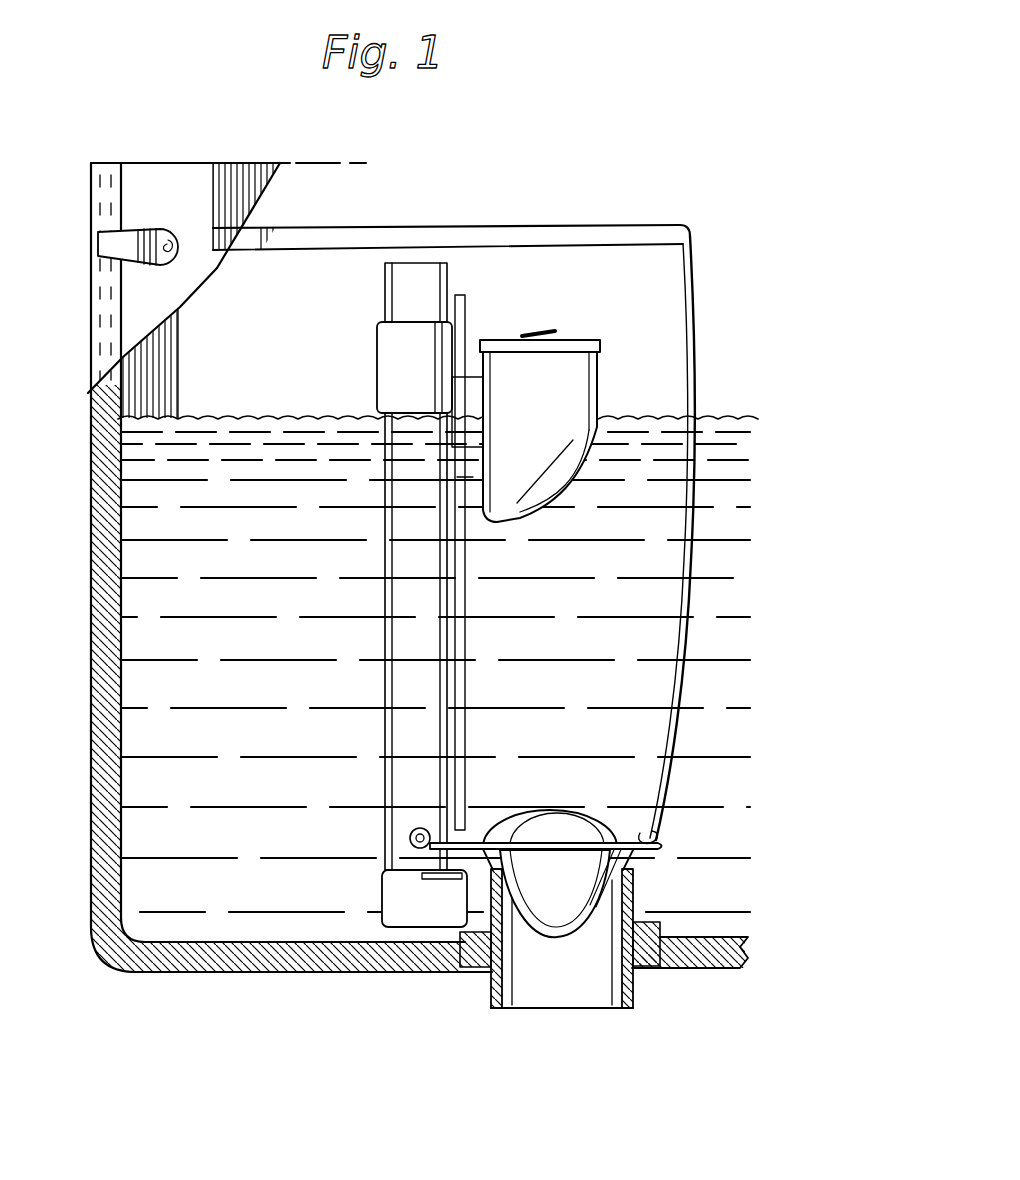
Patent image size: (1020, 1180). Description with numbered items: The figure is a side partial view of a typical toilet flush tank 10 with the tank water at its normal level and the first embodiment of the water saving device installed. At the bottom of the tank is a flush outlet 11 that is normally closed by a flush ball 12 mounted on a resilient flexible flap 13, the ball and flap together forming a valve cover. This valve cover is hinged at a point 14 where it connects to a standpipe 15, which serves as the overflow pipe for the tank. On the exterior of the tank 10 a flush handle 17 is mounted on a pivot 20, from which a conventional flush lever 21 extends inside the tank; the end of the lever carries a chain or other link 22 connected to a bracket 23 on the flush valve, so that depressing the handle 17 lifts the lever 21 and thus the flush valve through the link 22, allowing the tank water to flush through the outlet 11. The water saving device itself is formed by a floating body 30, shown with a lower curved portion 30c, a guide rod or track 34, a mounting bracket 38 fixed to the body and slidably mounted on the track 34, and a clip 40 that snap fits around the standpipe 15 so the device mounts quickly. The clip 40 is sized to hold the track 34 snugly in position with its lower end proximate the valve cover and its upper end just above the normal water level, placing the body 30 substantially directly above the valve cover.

The flush tank 10 is at (213, 960).
The flush outlet 11 is at (633, 885).
The flush ball 12 is at (612, 906).
The resilient flexible flap 13 is at (488, 850).
The hinge point 14 is at (405, 847).
The standpipe 15 is at (390, 602).
The flush handle 17 is at (127, 230).
The pivot 20 is at (150, 273).
The flush lever 21 is at (270, 231).
The link 22 is at (683, 642).
The bracket 23 is at (656, 841).
The floating body 30 is at (596, 378).
The cup spout 30c is at (567, 487).
The guide rod 34 is at (466, 572).
The mounting bracket 38 is at (473, 377).
The clip 40 is at (377, 365).